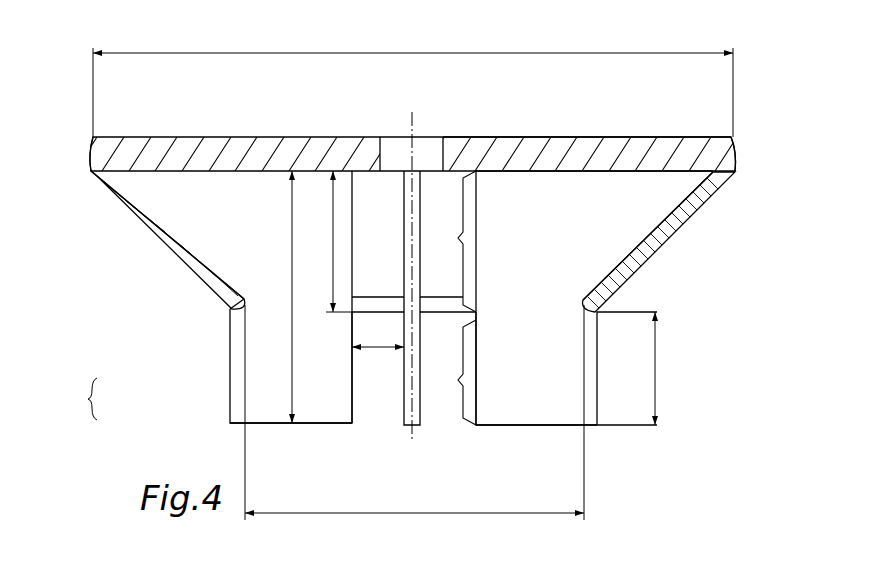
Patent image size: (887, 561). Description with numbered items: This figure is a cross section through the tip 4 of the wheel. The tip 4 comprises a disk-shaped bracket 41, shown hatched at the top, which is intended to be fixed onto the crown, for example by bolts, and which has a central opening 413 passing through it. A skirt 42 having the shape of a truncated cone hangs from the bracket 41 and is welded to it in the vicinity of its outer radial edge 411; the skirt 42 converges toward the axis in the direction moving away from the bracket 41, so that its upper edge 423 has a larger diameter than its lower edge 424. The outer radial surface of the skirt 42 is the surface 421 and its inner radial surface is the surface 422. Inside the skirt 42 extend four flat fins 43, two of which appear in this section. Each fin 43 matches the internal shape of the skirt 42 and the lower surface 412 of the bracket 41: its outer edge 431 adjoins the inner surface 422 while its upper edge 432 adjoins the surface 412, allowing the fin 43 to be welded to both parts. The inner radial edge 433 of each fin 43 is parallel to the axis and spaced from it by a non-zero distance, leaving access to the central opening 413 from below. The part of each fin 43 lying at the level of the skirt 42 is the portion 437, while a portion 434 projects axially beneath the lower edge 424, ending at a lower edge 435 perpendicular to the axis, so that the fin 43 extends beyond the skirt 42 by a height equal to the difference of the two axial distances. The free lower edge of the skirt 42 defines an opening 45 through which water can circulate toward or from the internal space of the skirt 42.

The tip 4 is at (82, 130).
The bracket 41 is at (293, 150).
The outer radial edge of the bracket 411 is at (738, 157).
The lower surface of the bracket 412 is at (577, 172).
The central opening 413 is at (395, 148).
The skirt 42 is at (167, 232).
The outer radial surface of the skirt 421 is at (655, 260).
The inner radial surface of the skirt 422 is at (147, 196).
The upper edge of the skirt 423 is at (91, 172).
The lower edge of the skirt 424 is at (245, 312).
The fin 43 is at (419, 397).
The outer edge of the fin 431 is at (668, 218).
The upper edge of the fin 432 is at (594, 168).
The inner radial edge of the fin 433 is at (355, 388).
The projecting portion of the fin 434 is at (138, 418).
The lower edge of the projecting portion 435 is at (332, 425).
The skirt-level portion of the fin 437 is at (135, 378).
The opening 45 is at (521, 303).